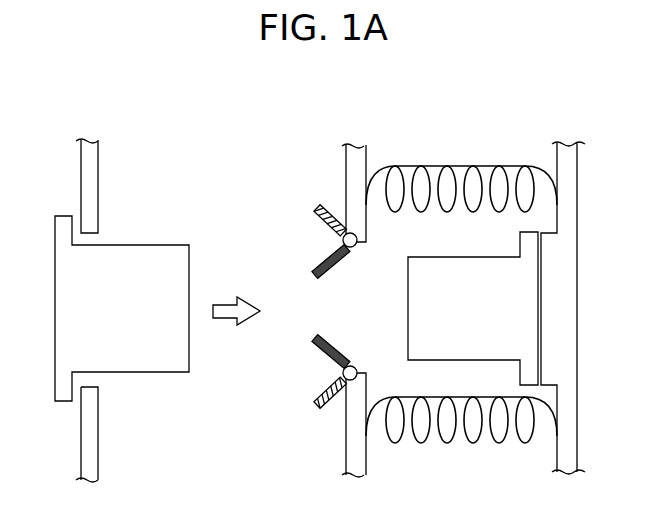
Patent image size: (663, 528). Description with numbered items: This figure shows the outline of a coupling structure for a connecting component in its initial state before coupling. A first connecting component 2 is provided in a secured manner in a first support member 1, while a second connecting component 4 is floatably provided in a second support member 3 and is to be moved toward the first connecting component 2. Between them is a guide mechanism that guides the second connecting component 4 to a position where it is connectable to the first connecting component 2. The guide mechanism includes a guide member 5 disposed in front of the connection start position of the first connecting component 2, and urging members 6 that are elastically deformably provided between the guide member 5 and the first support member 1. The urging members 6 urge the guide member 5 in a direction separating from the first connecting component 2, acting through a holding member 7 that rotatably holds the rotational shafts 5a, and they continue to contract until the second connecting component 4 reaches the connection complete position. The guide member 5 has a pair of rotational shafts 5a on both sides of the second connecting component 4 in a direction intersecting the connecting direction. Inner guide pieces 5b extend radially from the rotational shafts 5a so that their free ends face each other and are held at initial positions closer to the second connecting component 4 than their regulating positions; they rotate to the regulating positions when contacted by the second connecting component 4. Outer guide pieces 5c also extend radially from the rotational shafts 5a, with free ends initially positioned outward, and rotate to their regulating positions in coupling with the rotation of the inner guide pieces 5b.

The first support member 1 is at (568, 162).
The first connecting component 2 is at (526, 278).
The second support member 3 is at (88, 160).
The second connecting component 4 is at (70, 272).
The guide member 5 is at (319, 324).
The rotational shaft 5a is at (352, 248).
The inner guide piece 5b is at (320, 265).
The outer guide piece 5c is at (316, 222).
The urging member 6 is at (444, 167).
The holding member 7 is at (353, 162).